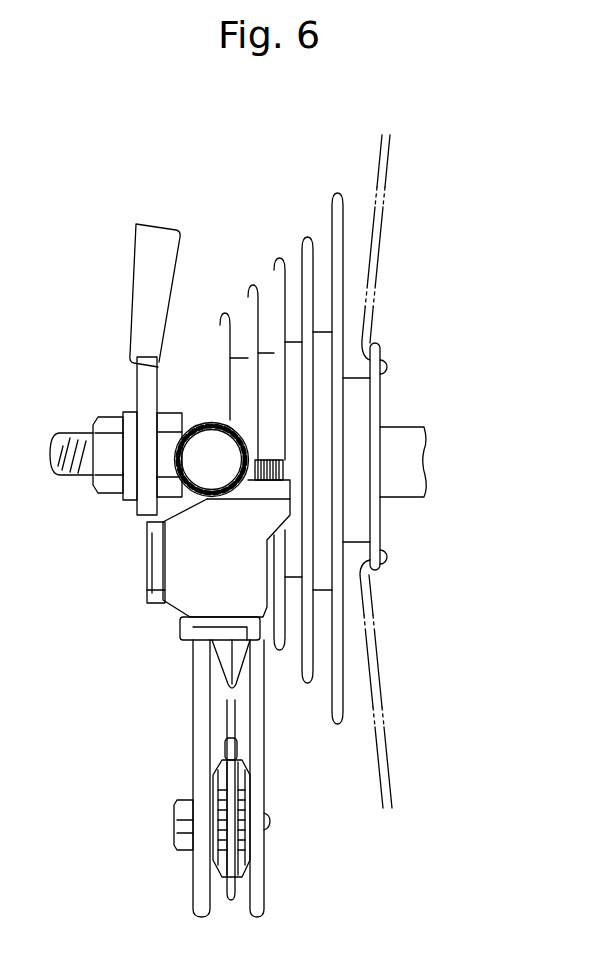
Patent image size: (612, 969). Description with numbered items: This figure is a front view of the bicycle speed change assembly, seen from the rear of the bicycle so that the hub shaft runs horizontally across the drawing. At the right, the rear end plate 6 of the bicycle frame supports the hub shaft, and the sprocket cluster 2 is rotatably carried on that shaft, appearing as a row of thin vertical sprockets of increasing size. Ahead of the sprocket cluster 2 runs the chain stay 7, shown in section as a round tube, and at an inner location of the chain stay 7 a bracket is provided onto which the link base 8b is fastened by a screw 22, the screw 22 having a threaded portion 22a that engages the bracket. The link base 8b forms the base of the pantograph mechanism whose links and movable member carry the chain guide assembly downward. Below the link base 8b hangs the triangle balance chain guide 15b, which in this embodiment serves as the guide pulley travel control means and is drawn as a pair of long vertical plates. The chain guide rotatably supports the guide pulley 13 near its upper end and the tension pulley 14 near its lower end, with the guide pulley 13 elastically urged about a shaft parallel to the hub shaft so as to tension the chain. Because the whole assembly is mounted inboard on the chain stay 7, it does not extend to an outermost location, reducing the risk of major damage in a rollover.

The sprocket cluster 2 is at (300, 235).
The rear end plate 6 is at (140, 378).
The chain stay 7 is at (199, 421).
The screw 22 is at (268, 458).
The abutment 22a is at (278, 492).
The link base 8b is at (185, 590).
The guide pulley 13 is at (230, 681).
The triangle balance chain guide 15b is at (205, 738).
The tension pulley 14 is at (230, 893).